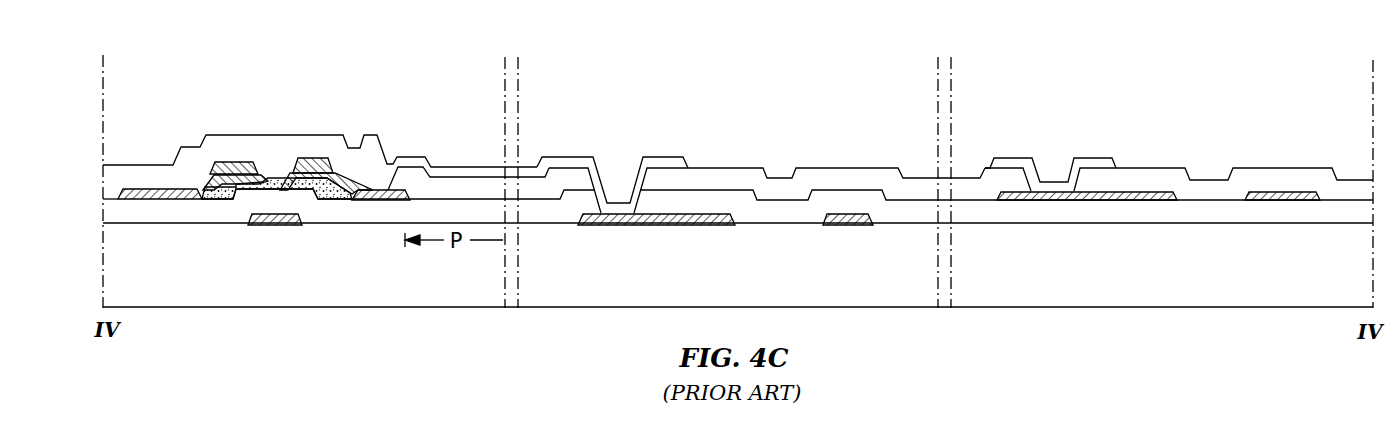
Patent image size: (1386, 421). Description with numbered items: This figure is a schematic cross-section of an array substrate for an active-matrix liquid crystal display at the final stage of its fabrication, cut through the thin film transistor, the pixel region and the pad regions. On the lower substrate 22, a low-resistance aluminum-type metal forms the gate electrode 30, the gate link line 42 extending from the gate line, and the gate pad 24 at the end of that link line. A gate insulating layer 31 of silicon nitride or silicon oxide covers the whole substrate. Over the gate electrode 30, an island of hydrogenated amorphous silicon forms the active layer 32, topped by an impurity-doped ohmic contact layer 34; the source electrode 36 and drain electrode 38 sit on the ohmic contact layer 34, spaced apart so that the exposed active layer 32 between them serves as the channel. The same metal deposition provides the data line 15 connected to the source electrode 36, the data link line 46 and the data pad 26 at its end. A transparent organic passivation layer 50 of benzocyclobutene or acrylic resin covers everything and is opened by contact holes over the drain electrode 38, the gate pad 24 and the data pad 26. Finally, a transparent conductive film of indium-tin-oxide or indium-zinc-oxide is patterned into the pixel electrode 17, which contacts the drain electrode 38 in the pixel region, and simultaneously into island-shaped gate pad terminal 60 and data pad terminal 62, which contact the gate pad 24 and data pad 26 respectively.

The data line 15 is at (155, 190).
The pixel electrode 17 is at (413, 188).
The lower substrate 22 is at (745, 276).
The gate pad 24 is at (622, 226).
The data pad 26 is at (1042, 201).
The gate electrode 30 is at (272, 226).
The gate insulating layer 31 is at (298, 193).
The active layer 32 is at (270, 180).
The ohmic contact layer 34 is at (249, 162).
The source electrode 36 is at (222, 163).
The drain electrode 38 is at (327, 172).
The gate link line 42 is at (848, 226).
The data link line 46 is at (1152, 190).
The passivation layer 50 is at (343, 130).
The gate pad terminal 60 is at (670, 156).
The data pad terminal 62 is at (1100, 157).